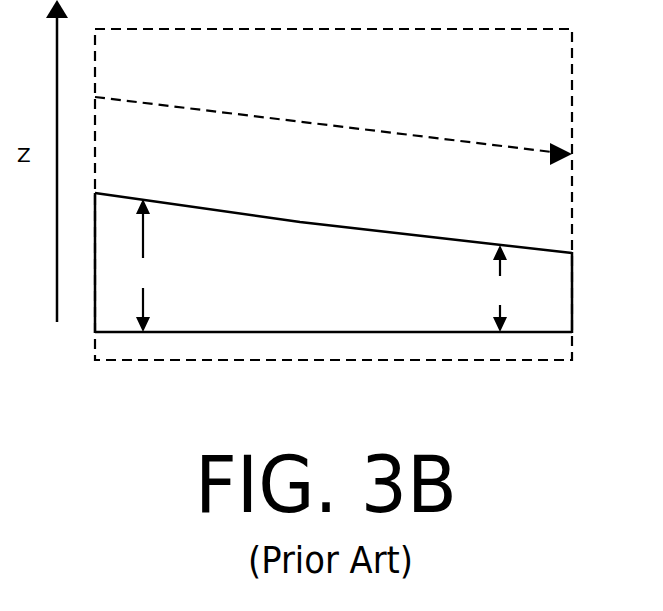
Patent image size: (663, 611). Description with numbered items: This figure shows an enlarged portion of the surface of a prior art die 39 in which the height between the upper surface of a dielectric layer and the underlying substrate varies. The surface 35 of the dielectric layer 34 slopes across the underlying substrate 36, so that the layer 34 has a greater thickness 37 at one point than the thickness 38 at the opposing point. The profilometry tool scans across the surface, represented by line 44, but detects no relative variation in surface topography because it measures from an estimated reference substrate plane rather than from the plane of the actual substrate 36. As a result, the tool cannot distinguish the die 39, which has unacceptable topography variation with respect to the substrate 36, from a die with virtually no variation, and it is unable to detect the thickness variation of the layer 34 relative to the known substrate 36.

The dielectric layer 34 is at (333, 263).
The surface 35 is at (440, 238).
The underlying substrate 36 is at (440, 333).
The thickness 37 is at (145, 265).
The thickness 38 is at (502, 288).
The die 39 is at (557, 56).
The line 44 is at (440, 136).